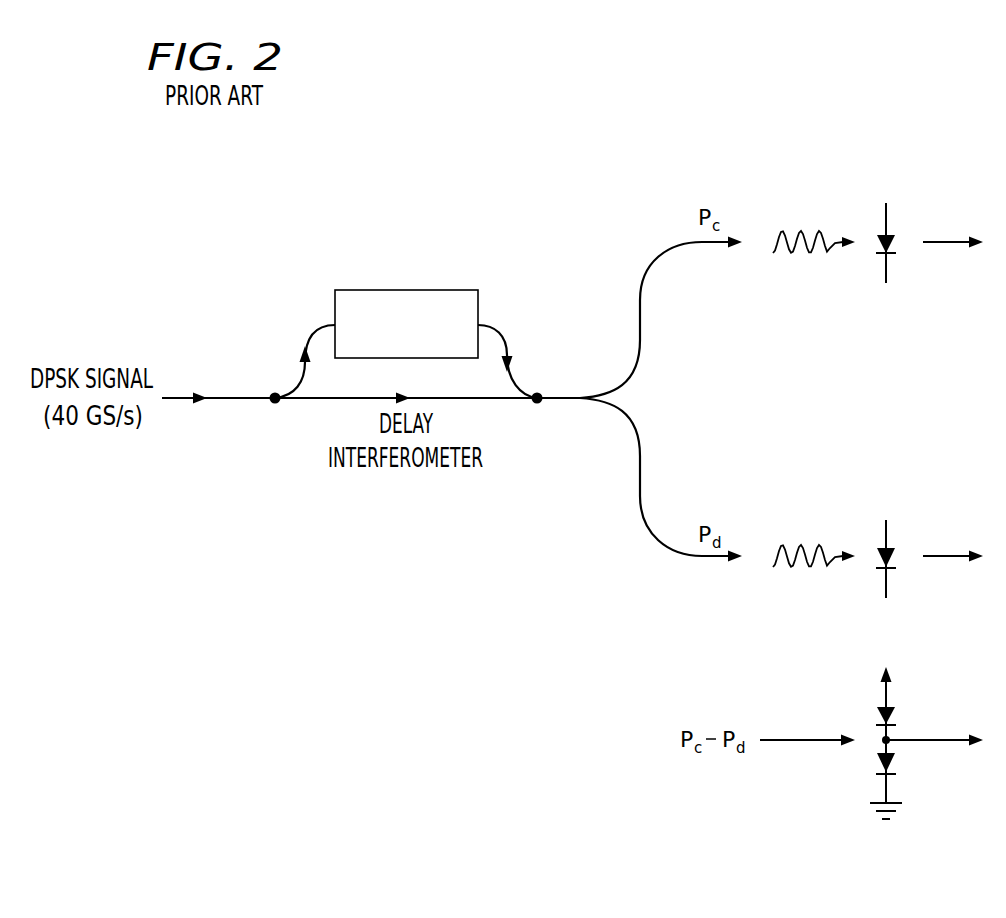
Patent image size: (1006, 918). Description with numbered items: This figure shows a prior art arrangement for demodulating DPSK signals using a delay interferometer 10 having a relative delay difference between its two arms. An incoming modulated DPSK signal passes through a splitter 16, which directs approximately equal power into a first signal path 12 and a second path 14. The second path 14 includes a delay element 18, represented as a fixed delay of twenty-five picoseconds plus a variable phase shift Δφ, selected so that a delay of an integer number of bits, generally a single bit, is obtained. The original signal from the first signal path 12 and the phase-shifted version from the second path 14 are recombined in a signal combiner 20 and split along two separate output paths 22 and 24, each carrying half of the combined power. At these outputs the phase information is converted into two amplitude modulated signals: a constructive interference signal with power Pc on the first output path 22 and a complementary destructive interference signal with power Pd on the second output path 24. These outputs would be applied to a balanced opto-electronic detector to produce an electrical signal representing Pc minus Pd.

The delay interferometer 10 is at (262, 186).
The first signal path 12 is at (325, 399).
The second path 14 is at (306, 341).
The splitter 16 is at (273, 397).
The delay element 18 is at (425, 290).
The signal combiner 20 is at (540, 396).
The first output path 22 is at (708, 247).
The second output path 24 is at (708, 560).